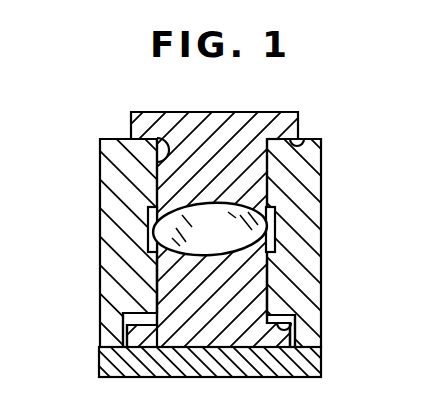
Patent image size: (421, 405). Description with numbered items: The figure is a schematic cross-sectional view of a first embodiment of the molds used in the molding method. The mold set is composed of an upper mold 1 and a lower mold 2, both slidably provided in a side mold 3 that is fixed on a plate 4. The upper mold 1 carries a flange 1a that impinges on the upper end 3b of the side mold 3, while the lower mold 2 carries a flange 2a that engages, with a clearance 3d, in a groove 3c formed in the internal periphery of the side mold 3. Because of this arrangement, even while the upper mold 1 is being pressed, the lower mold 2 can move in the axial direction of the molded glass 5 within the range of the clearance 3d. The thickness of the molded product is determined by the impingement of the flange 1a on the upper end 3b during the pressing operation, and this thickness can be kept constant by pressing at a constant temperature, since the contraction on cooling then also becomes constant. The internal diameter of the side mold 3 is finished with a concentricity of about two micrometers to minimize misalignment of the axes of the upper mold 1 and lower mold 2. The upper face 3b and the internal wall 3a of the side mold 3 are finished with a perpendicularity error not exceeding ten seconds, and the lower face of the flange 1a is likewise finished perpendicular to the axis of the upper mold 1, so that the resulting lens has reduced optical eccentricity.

The upper mold 1 is at (252, 173).
The flange 1a is at (306, 139).
The lower mold 2 is at (255, 283).
The flange 2a is at (293, 330).
The side mold 3 is at (310, 238).
The internal wall 3a is at (150, 134).
The upper end 3b is at (272, 139).
The groove 3c is at (297, 320).
The clearance 3d is at (123, 313).
The plate 4 is at (313, 358).
The molded glass 5 is at (268, 224).